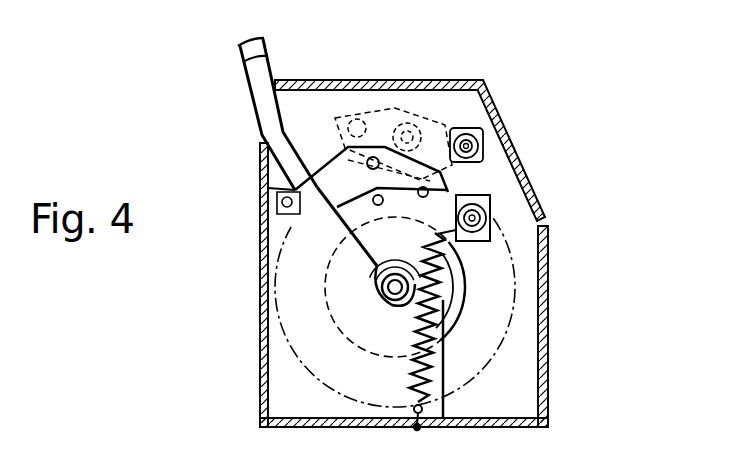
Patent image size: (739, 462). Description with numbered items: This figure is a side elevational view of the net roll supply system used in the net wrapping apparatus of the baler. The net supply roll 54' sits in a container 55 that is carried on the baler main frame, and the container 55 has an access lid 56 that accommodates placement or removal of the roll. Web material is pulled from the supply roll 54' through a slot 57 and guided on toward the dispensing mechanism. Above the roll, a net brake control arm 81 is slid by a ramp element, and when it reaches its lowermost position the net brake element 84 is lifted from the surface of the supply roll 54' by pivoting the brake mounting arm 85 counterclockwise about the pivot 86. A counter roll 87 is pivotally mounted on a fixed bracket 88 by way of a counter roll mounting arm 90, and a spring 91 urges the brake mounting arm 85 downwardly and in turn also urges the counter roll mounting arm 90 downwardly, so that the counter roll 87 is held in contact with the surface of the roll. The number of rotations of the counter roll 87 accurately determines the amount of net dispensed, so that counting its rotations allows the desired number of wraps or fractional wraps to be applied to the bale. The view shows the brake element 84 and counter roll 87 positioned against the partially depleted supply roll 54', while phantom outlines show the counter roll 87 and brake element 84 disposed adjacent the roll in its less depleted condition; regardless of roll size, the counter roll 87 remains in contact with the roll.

The supply roll 54' is at (533, 330).
The container 55 is at (548, 268).
The access lid 56 is at (493, 100).
The slot 57 is at (256, 138).
The net brake control arm 81 is at (254, 85).
The net brake element 84 is at (343, 250).
The brake mounting arm 85 is at (412, 222).
The pivot 86 is at (342, 312).
The counter roll 87 is at (457, 185).
The fixed bracket 88 is at (297, 397).
The counter roll mounting arm 90 is at (333, 141).
The spring 91 is at (427, 367).